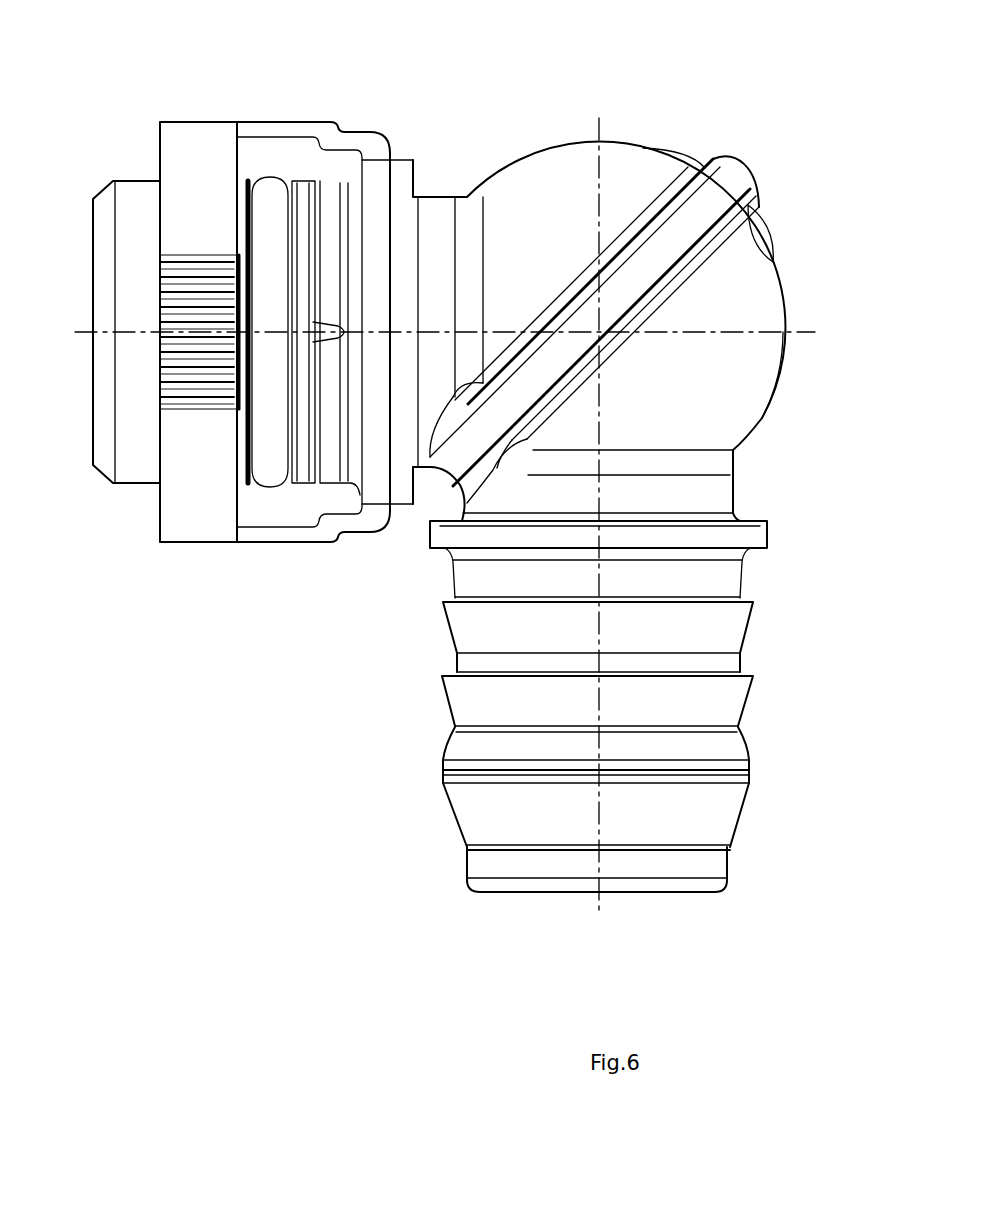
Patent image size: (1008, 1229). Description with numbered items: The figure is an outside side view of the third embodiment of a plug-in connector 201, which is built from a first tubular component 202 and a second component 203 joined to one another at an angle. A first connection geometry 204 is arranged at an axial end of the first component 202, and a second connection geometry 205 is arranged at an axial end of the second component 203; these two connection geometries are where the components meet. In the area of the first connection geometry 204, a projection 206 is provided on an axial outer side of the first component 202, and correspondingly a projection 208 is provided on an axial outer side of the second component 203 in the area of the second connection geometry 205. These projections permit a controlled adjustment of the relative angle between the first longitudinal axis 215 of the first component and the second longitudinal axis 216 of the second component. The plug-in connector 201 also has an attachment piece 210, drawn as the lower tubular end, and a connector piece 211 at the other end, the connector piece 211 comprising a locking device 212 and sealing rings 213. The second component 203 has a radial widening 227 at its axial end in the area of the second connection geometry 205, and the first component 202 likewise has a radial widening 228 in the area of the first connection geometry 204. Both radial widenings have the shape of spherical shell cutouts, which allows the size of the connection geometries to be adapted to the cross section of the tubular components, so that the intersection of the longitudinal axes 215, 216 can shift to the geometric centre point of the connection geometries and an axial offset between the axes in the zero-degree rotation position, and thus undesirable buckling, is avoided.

The plug-in connector 201 is at (472, 131).
The first component 202 is at (677, 500).
The second component 203 is at (438, 215).
The first connection geometry 204 is at (766, 201).
The second connection geometry 205 is at (716, 150).
The projection 206 is at (770, 245).
The projection 208 is at (677, 145).
The attachment piece 210 is at (430, 774).
The connector piece 211 is at (206, 570).
The locking device 212 is at (190, 142).
The sealing rings 213 is at (268, 472).
The first longitudinal axis 215 is at (599, 905).
The second longitudinal axis 216 is at (78, 334).
The radial widening 227 is at (563, 160).
The radial widening 228 is at (765, 375).